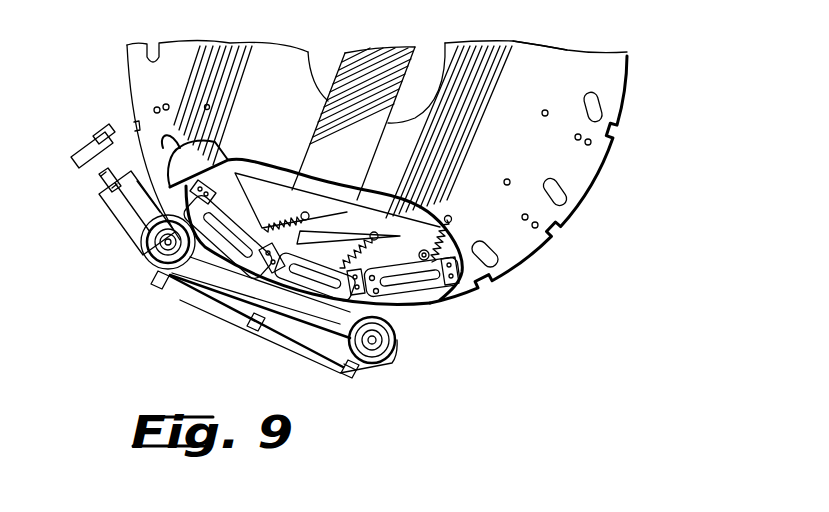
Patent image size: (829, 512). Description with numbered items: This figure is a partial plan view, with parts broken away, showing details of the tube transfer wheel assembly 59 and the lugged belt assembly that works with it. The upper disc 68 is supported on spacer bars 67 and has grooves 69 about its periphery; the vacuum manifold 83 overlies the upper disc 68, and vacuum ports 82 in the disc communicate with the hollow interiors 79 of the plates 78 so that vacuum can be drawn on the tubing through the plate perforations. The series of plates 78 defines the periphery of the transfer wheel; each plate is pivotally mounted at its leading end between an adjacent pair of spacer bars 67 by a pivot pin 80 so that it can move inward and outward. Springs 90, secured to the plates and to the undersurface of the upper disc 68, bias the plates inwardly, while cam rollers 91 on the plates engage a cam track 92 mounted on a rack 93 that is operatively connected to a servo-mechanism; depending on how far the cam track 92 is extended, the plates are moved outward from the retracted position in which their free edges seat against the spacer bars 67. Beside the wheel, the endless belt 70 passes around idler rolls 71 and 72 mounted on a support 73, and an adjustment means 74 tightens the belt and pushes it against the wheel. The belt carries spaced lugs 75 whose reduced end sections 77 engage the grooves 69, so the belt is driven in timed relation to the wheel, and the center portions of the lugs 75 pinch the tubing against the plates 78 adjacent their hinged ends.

The tube transfer wheel assembly 59 is at (642, 95).
The spacer bars 67 is at (210, 177).
The upper disc 68 is at (584, 208).
The grooves 69 is at (486, 290).
The endless belt 70 is at (212, 302).
The idler roll 71 is at (146, 255).
The idler roll 72 is at (397, 352).
The support 73 is at (163, 290).
The adjustment means 74 is at (78, 162).
The lugs 75 is at (250, 333).
The reduced end section 77 is at (256, 330).
The plates 78 is at (250, 306).
The hollow interiors 79 is at (230, 247).
The pivot pins 80 is at (280, 288).
The vacuum ports 82 is at (193, 126).
The vacuum manifold 83 is at (232, 157).
The springs 90 is at (302, 213).
The cam rollers 91 is at (265, 222).
The cam track 92 is at (352, 223).
The rack 93 is at (338, 196).